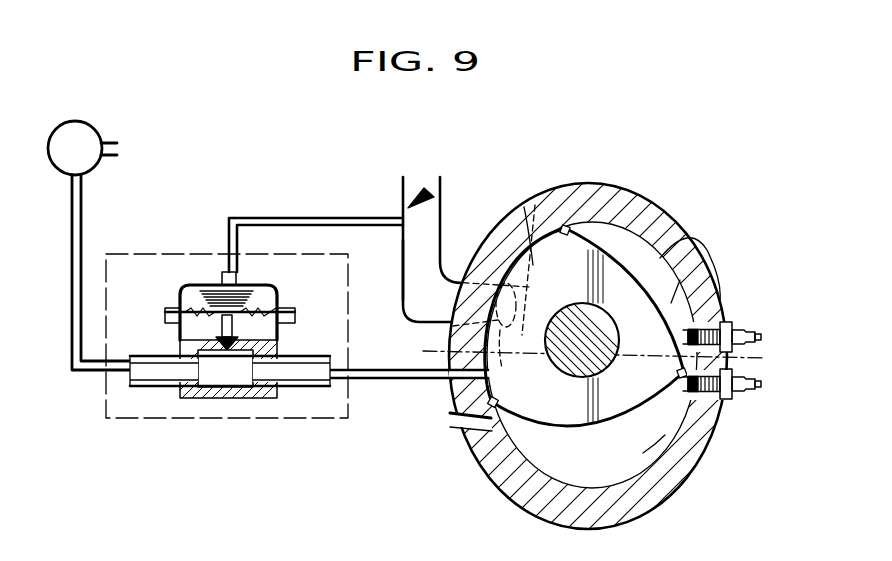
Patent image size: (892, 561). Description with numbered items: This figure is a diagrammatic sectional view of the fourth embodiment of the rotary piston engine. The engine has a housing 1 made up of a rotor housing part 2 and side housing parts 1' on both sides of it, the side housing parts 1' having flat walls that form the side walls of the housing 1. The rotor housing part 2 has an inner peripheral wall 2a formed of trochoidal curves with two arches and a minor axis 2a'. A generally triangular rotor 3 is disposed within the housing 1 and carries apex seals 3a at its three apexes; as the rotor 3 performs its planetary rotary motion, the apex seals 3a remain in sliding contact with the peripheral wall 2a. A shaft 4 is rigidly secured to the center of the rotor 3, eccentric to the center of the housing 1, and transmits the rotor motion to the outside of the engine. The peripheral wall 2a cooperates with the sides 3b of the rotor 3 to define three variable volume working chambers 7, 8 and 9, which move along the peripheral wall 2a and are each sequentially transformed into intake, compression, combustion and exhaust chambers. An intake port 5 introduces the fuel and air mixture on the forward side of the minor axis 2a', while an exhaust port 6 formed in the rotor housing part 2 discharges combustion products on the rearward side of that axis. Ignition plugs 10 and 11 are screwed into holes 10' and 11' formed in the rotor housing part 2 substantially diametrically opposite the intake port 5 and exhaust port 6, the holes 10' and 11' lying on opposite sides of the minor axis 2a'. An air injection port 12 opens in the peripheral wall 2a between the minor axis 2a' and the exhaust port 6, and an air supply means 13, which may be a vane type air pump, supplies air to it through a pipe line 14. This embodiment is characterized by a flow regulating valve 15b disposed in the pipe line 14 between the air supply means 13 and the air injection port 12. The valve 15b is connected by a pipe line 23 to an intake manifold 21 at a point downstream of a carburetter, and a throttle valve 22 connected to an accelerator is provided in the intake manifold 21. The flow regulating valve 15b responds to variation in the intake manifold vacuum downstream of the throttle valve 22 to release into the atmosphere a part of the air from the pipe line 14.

The housing 1 is at (588, 333).
The side housing part 1' is at (691, 252).
The rotor housing part 2 is at (668, 221).
The peripheral wall 2a is at (622, 355).
The trochoidal minor axis 2a' is at (521, 368).
The rotor 3 is at (584, 335).
The apex seals 3a is at (567, 226).
The sides of the rotor 3b is at (518, 259).
The shaft 4 is at (580, 302).
The intake port 5 is at (489, 298).
The exhaust port 6 is at (456, 430).
The working chamber 7 is at (524, 207).
The working chamber 8 is at (671, 303).
The working chamber 9 is at (643, 453).
The ignition plug 10 is at (727, 402).
The hole 10' is at (665, 406).
The ignition plug 11 is at (732, 327).
The hole 11' is at (721, 309).
The air injection port 12 is at (462, 360).
The air supply means 13 is at (90, 121).
The pipe line 14 is at (396, 380).
The flow regulating valve 15b is at (225, 426).
The intake manifold 21 is at (403, 266).
The throttle valve 22 is at (428, 192).
The pipe line 23 is at (322, 217).